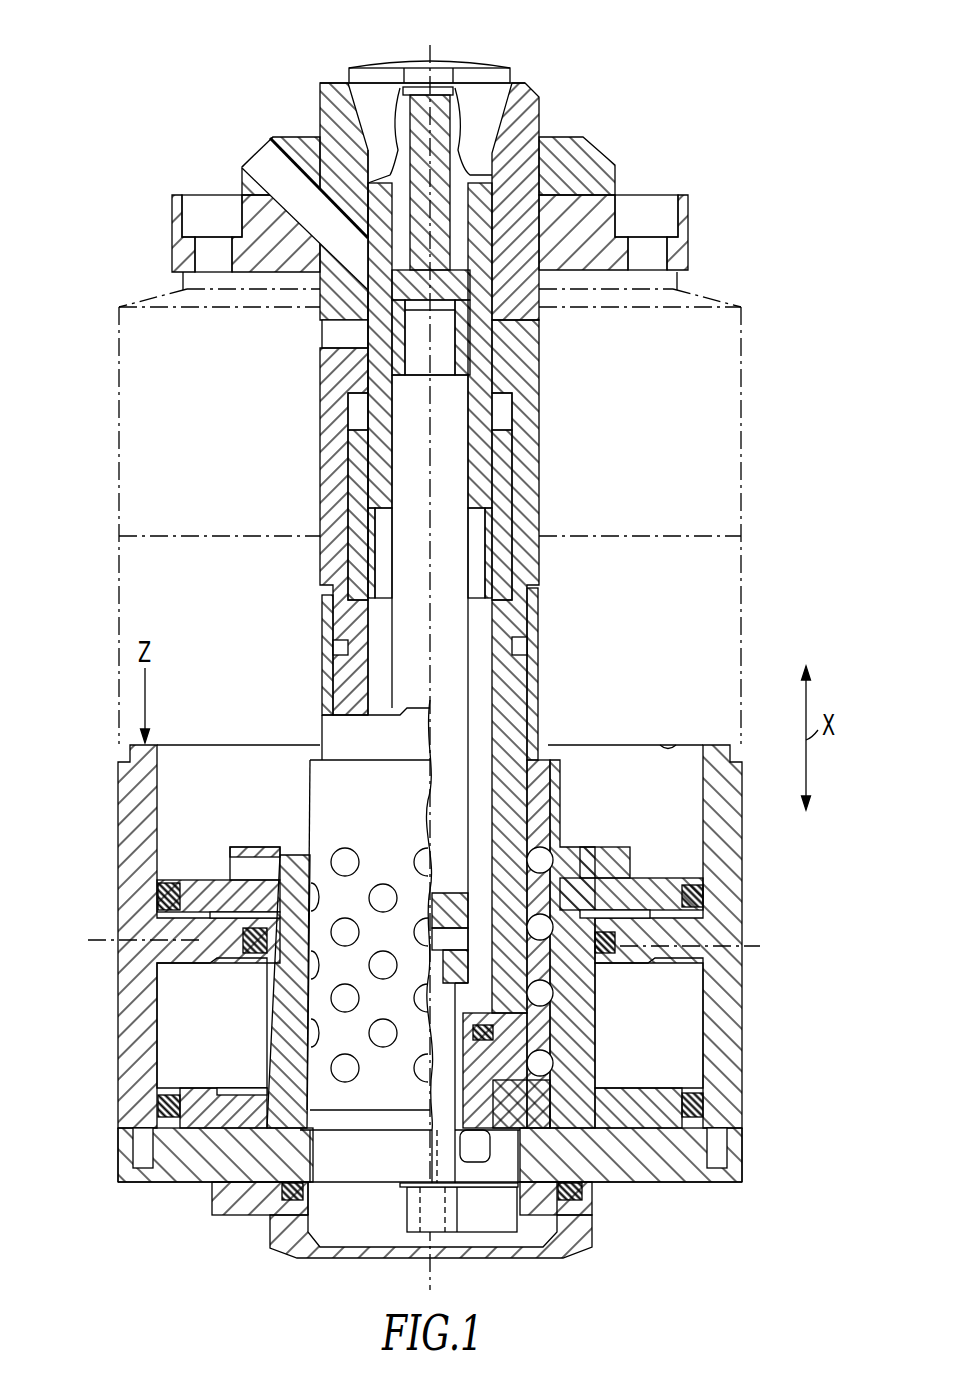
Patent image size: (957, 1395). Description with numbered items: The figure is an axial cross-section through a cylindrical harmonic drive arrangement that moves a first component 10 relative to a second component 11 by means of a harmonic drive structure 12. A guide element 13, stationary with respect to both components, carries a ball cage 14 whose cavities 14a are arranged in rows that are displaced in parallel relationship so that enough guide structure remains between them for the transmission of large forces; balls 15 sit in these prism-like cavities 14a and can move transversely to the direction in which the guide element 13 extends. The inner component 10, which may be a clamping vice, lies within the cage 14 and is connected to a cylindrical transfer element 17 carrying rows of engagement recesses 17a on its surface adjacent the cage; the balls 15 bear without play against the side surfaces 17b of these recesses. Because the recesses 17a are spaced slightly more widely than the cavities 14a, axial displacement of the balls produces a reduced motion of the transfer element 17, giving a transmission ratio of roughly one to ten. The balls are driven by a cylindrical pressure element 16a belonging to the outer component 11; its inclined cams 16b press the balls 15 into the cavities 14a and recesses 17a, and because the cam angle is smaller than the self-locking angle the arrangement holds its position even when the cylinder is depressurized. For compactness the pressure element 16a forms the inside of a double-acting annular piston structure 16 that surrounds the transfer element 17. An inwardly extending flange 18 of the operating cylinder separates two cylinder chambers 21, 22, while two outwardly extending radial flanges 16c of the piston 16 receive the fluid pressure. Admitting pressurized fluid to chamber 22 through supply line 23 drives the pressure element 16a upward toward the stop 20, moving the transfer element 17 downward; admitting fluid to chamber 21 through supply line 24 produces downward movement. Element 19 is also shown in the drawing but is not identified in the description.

The first component 10 is at (500, 48).
The second component 11 is at (110, 984).
The harmonic drive structure 12 is at (480, 877).
The guide element 13 is at (527, 338).
The ball cage 14 is at (454, 938).
The cavities 14a is at (342, 857).
The balls 15 is at (565, 1064).
The annular piston structure 16 is at (262, 1002).
The pressure element 16a is at (288, 1052).
The cams 16b is at (308, 867).
The radial flanges 16c is at (205, 1103).
The transfer element 17 is at (532, 668).
The engagement recesses 17a is at (492, 838).
The side surfaces 17b is at (487, 800).
The inwardly extending flange 18 is at (200, 962).
The bottom plate 19 is at (180, 1170).
The stop 20 is at (668, 745).
The cylinder chamber 21 is at (150, 996).
The cylinder chamber 22 is at (157, 896).
The pressurized fluid supply line 23 is at (97, 940).
The pressurized fluid supply line 24 is at (745, 946).